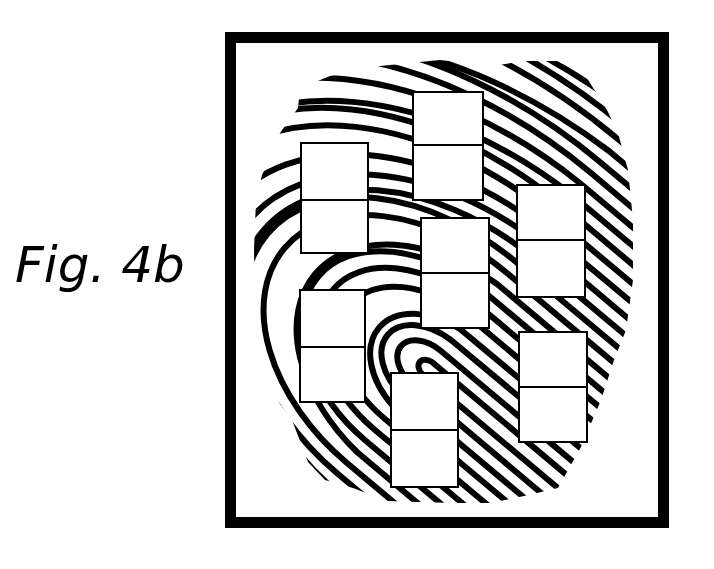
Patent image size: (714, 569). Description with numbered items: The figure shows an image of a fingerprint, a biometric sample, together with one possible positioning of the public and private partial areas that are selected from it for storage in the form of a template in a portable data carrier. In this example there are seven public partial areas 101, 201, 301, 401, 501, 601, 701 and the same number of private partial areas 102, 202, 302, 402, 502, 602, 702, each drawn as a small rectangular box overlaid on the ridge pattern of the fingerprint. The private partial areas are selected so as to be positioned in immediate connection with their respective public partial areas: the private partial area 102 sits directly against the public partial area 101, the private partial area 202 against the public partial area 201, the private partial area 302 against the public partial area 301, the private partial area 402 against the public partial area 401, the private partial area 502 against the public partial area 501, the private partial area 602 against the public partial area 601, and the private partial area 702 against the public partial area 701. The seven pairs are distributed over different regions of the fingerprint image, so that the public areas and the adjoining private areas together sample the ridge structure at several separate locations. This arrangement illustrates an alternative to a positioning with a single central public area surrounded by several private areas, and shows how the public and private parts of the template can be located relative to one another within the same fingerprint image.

The public partial area 101 is at (455, 300).
The private partial area 102 is at (455, 245).
The public partial area 201 is at (334, 226).
The private partial area 202 is at (334, 171).
The public partial area 301 is at (448, 172).
The private partial area 302 is at (448, 118).
The public partial area 401 is at (551, 268).
The private partial area 402 is at (551, 212).
The public partial area 501 is at (553, 414).
The private partial area 502 is at (553, 359).
The public partial area 601 is at (424, 458).
The private partial area 602 is at (424, 401).
The public partial area 701 is at (332, 374).
The private partial area 702 is at (332, 318).